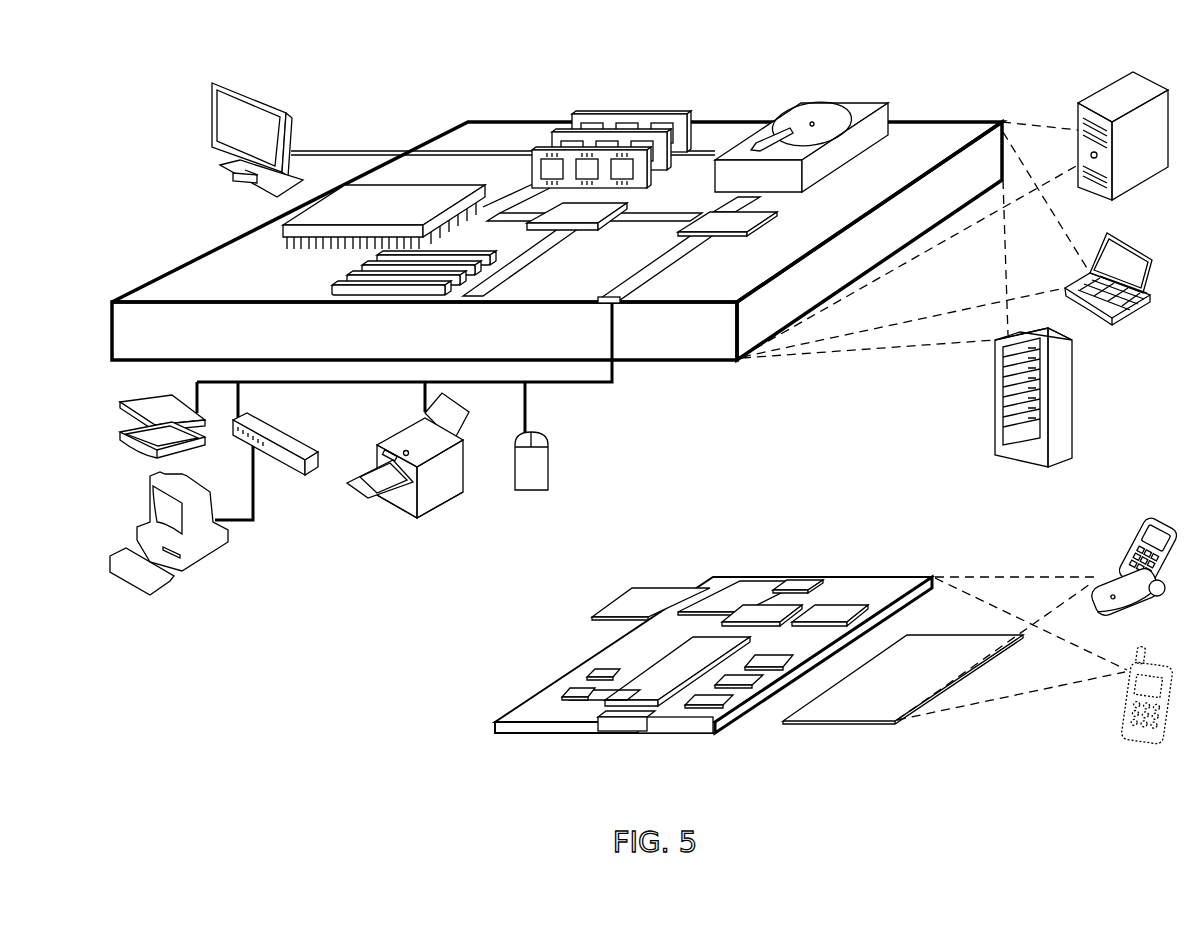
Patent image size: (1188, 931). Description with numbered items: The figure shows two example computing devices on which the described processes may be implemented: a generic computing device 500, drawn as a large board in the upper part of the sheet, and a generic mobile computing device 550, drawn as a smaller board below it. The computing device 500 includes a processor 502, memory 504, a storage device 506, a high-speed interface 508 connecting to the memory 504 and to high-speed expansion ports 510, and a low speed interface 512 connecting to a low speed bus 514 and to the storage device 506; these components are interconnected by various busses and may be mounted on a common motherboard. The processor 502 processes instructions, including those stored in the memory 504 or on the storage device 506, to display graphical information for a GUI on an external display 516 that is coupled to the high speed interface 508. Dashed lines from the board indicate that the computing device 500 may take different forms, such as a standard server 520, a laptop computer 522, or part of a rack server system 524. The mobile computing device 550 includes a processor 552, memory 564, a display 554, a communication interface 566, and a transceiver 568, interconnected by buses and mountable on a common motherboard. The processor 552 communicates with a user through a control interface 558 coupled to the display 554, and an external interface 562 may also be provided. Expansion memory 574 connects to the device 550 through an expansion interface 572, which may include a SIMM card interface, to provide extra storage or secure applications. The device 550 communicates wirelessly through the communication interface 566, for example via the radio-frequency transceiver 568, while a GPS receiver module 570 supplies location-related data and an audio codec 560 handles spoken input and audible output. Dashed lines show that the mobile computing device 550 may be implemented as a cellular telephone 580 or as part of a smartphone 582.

The computing device 500 is at (397, 94).
The processor 502 is at (285, 233).
The memory 504 is at (592, 128).
The storage device 506 is at (798, 110).
The high-speed interface 508 is at (557, 217).
The high-speed expansion ports 510 is at (343, 272).
The low speed interface 512 is at (722, 218).
The low speed bus 514 is at (618, 305).
The display 516 is at (211, 92).
The standard server 520 is at (1078, 112).
The laptop computer 522 is at (1110, 238).
The rack server system 524 is at (995, 420).
The mobile computing device 550 is at (694, 555).
The processor 552 is at (653, 706).
The display 554 is at (897, 722).
The control interface 558 is at (767, 678).
The audio codec 560 is at (770, 666).
The external interface 562 is at (622, 718).
The memory 564 is at (578, 692).
The communication interface 566 is at (757, 608).
The transceiver 568 is at (828, 605).
The GPS receiver module 570 is at (800, 585).
The expansion interface 572 is at (692, 592).
The expansion memory 574 is at (630, 592).
The cellular telephone 580 is at (1148, 521).
The smartphone 582 is at (1132, 652).